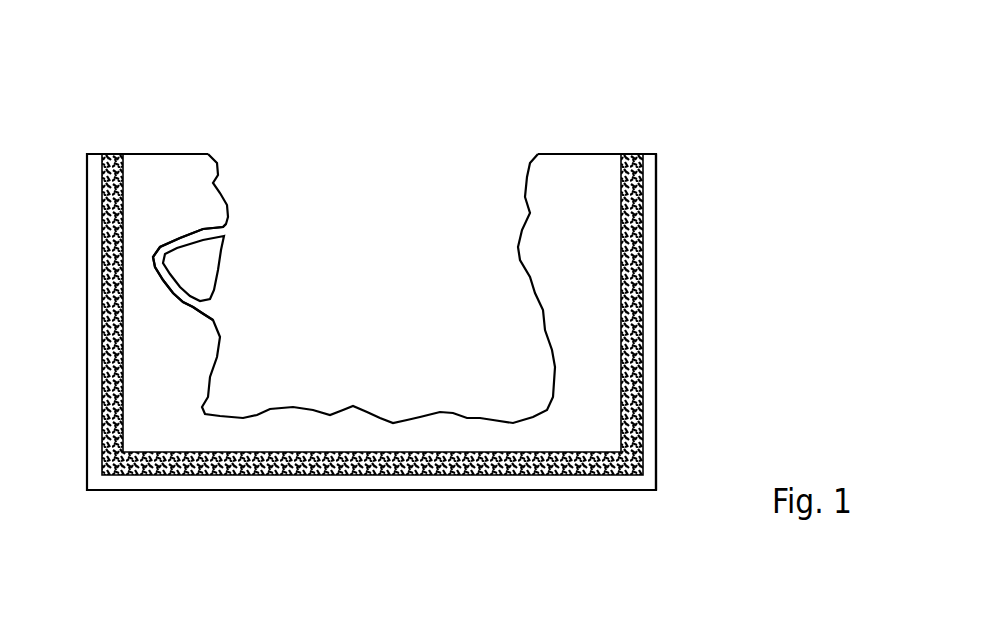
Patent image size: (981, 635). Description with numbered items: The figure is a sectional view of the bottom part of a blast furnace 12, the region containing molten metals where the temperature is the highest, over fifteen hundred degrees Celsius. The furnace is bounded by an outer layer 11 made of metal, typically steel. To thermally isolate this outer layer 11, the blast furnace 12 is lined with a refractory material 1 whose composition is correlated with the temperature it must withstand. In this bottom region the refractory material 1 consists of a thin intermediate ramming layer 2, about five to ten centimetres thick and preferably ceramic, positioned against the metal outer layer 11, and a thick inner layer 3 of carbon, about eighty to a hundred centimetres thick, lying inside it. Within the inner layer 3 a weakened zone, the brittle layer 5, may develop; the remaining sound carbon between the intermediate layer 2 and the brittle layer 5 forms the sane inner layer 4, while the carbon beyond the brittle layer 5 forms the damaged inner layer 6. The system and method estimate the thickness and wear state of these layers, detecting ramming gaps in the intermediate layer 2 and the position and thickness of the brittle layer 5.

The refractory material 1 is at (590, 127).
The intermediate ramming layer 2 is at (643, 308).
The inner layer 3 is at (140, 387).
The sane inner layer 4 is at (573, 412).
The brittle layer 5 is at (180, 293).
The damaged inner layer 6 is at (183, 265).
The outer layer 11 is at (650, 272).
The blast furnace 12 is at (740, 184).